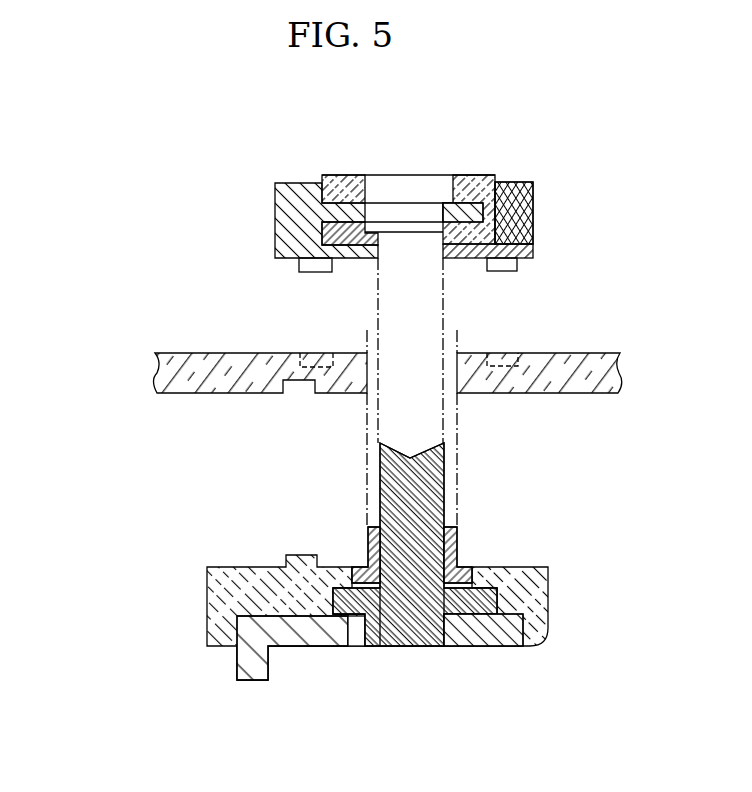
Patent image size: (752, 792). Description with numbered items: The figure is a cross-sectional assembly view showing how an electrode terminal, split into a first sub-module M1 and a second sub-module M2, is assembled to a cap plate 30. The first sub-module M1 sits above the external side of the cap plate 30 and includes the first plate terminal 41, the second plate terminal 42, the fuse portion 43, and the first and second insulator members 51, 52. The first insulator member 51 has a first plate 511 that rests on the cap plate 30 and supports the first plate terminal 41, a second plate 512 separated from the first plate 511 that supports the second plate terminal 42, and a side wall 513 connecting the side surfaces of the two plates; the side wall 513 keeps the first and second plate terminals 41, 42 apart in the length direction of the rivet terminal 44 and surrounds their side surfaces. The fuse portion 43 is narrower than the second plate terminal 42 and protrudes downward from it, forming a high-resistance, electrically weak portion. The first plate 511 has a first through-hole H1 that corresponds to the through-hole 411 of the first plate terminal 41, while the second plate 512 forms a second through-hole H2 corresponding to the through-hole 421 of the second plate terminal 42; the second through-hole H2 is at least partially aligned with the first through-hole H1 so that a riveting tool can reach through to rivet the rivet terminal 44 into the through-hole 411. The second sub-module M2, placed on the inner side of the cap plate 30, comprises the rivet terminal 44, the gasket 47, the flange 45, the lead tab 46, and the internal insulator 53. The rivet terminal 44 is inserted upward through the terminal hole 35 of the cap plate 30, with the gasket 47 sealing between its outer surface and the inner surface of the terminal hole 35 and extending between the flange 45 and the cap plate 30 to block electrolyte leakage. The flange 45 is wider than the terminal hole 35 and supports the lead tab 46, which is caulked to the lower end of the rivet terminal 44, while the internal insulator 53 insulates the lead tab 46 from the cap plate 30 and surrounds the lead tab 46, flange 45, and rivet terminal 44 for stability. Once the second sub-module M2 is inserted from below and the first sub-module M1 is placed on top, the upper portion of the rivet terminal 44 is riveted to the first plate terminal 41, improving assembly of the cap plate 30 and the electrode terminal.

The first sub-module M1 is at (152, 224).
The second sub-module M2 is at (134, 590).
The first insulator member 51 is at (272, 176).
The first plate 511 is at (460, 258).
The second plate 512 is at (470, 207).
The side wall 513 is at (277, 216).
The second insulator member 52 is at (546, 181).
The first plate terminal 41 is at (322, 240).
The through-hole 411 is at (374, 262).
The second plate terminal 42 is at (343, 190).
The through-hole 421 is at (440, 193).
The fuse portion 43 is at (495, 213).
The first through-hole H1 is at (410, 258).
The second through-hole H2 is at (371, 202).
The cap plate 30 is at (570, 383).
The terminal hole 35 is at (440, 392).
The rivet terminal 44 is at (410, 606).
The flange 45 is at (478, 601).
The lead tab 46 is at (253, 681).
The gasket 47 is at (456, 540).
The internal insulator 53 is at (218, 648).